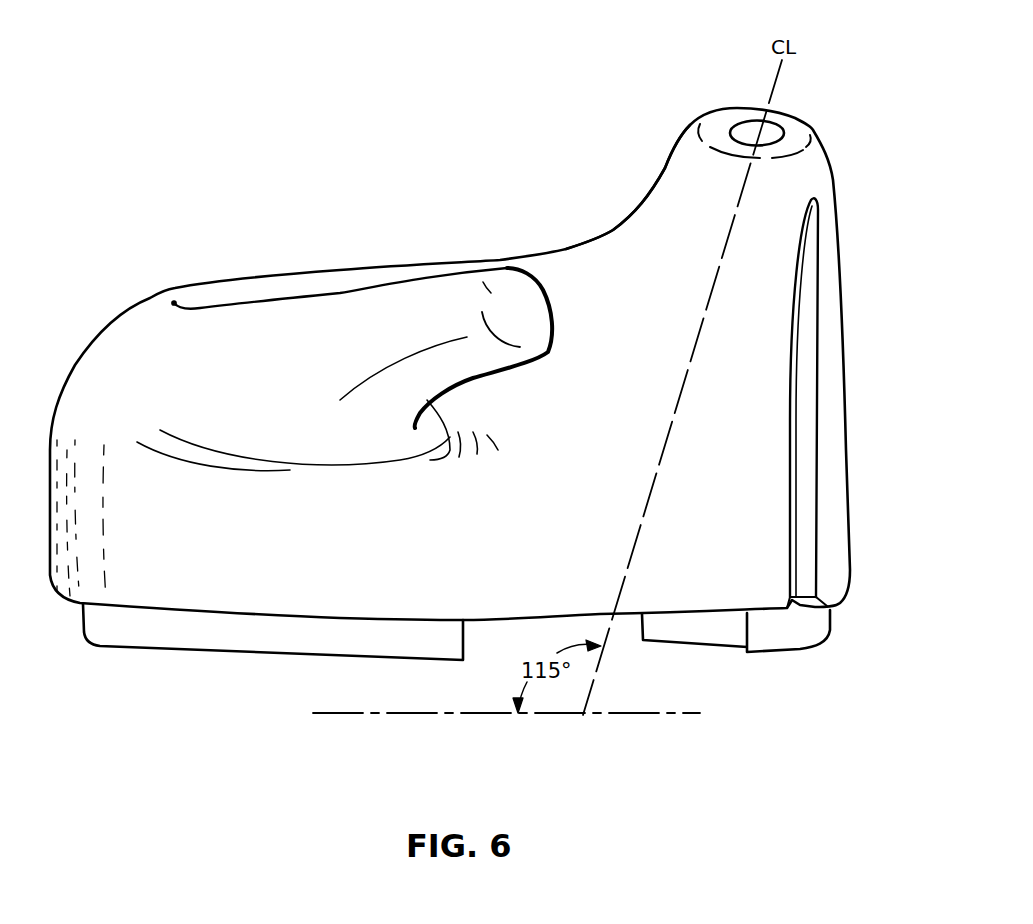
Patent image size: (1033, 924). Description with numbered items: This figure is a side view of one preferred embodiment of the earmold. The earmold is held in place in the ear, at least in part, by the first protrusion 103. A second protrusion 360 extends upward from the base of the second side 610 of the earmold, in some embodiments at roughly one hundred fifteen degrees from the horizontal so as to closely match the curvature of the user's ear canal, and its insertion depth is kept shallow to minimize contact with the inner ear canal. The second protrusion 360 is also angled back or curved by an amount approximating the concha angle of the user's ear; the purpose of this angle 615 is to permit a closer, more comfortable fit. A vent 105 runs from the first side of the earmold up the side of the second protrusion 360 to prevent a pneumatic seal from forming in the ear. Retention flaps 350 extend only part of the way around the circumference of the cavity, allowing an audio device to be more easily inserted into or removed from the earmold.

The second side 610 is at (162, 270).
The angle 615 is at (613, 230).
The second protrusion 360 is at (795, 120).
The first protrusion 103 is at (457, 297).
The vent 105 is at (810, 277).
The retention flaps 350 is at (158, 640).